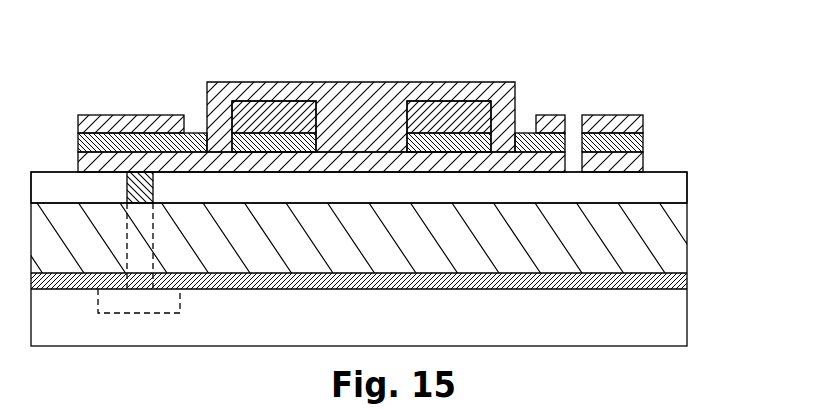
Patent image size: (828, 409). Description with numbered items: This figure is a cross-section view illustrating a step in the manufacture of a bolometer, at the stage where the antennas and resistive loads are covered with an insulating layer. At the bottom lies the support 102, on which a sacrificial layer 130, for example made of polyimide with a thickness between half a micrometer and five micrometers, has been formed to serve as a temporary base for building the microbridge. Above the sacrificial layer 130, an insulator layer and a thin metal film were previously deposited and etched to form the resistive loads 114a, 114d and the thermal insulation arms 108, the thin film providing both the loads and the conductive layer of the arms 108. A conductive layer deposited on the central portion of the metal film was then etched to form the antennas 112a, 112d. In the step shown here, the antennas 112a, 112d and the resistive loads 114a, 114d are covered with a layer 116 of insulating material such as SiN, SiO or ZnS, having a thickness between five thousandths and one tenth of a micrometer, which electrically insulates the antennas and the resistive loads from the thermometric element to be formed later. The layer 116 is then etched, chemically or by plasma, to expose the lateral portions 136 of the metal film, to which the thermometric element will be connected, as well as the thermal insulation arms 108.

The support 102 is at (700, 173).
The thermal insulation arm 108 is at (607, 98).
The antenna 112a is at (430, 117).
The antenna 112d is at (283, 110).
The resistive load 114a is at (458, 140).
The resistive load 114d is at (253, 140).
The insulating layer 116 is at (358, 110).
The sacrificial layer 130 is at (659, 190).
The lateral portion of metal film 136 is at (197, 121).